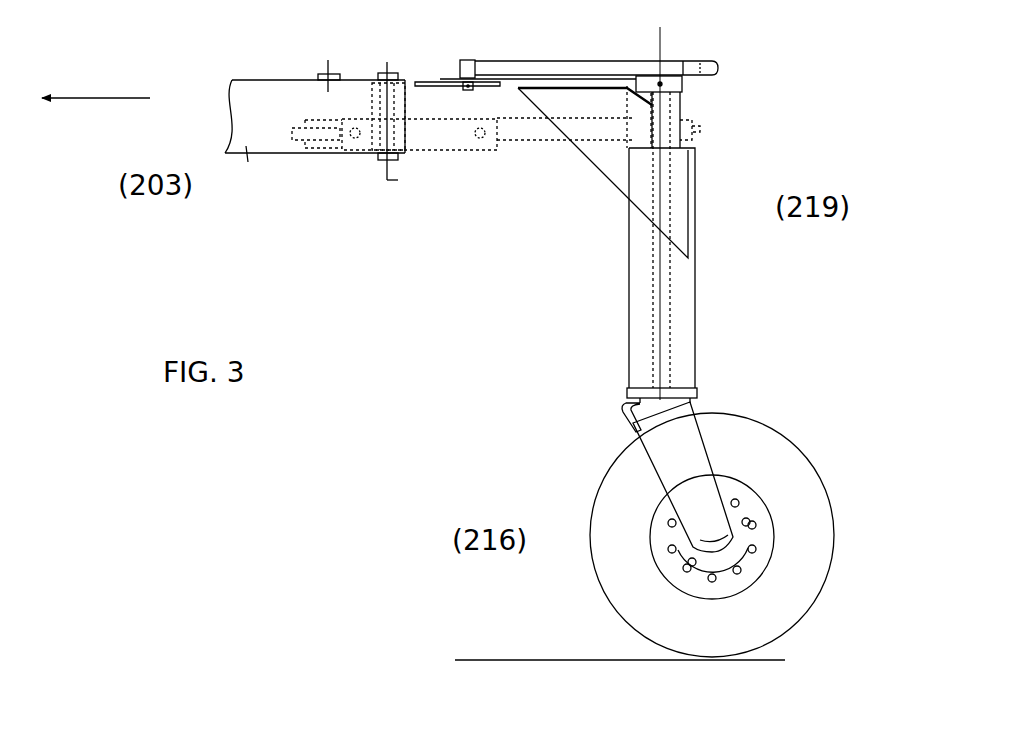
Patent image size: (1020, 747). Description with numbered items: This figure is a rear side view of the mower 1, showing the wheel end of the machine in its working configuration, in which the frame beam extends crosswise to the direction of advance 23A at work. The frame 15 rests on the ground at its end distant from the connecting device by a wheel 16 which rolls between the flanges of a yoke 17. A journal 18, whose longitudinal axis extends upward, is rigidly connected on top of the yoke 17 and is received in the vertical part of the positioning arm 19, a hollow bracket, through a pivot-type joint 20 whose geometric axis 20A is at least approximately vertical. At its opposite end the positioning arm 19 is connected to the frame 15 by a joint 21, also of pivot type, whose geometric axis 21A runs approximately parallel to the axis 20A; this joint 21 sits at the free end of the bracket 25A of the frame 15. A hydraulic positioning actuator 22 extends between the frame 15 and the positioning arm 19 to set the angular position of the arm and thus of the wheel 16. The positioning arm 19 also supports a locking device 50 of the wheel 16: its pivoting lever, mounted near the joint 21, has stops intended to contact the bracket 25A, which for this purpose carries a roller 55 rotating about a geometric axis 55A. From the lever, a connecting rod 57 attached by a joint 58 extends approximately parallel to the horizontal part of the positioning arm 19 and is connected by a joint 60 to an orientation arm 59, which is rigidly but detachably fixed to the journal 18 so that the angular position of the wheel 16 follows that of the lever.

The mower 1 is at (477, 327).
The frame 15 is at (248, 157).
The wheel 16 is at (765, 440).
The yoke 17 is at (630, 406).
The journal 18 is at (632, 364).
The positioning arm 19 is at (636, 282).
The pivot-type joint 20 is at (668, 313).
The geometric axis 20A is at (663, 342).
The joint 21 is at (408, 78).
The geometric axis 21A is at (398, 180).
The hydraulic positioning actuator 22 is at (458, 149).
The direction of advance at work 23A is at (116, 98).
The bracket 25A is at (277, 154).
The locking device 50 is at (448, 78).
The roller 55 is at (318, 77).
The geometric axis 55A is at (327, 72).
The connecting rod 57 is at (572, 68).
The joint 58 is at (490, 88).
The orientation arm 59 is at (686, 85).
The joint 60 is at (718, 68).